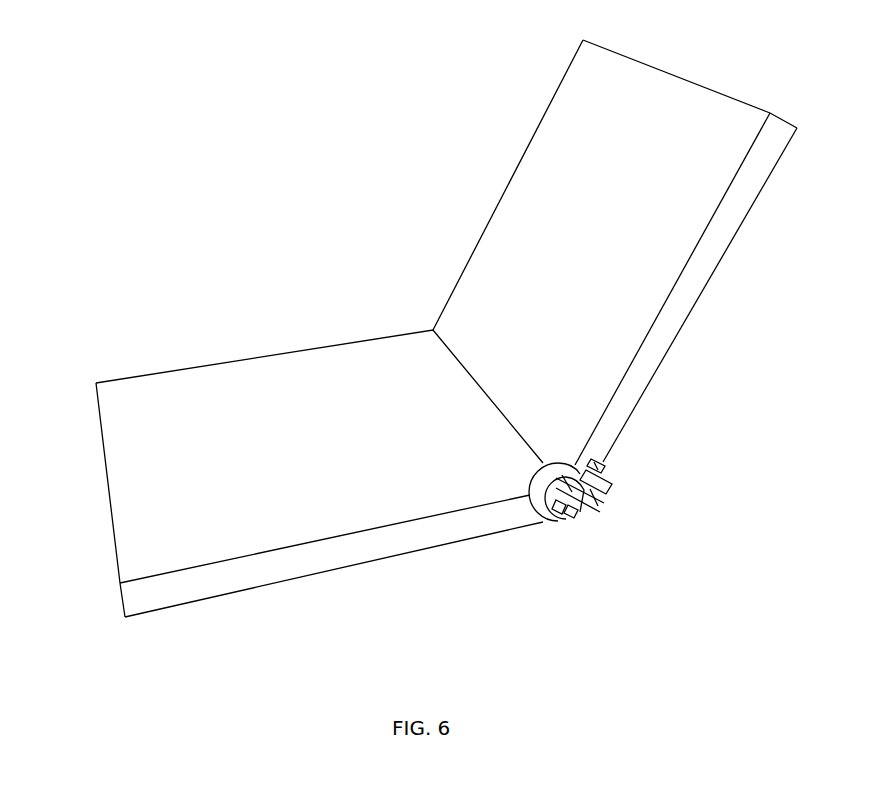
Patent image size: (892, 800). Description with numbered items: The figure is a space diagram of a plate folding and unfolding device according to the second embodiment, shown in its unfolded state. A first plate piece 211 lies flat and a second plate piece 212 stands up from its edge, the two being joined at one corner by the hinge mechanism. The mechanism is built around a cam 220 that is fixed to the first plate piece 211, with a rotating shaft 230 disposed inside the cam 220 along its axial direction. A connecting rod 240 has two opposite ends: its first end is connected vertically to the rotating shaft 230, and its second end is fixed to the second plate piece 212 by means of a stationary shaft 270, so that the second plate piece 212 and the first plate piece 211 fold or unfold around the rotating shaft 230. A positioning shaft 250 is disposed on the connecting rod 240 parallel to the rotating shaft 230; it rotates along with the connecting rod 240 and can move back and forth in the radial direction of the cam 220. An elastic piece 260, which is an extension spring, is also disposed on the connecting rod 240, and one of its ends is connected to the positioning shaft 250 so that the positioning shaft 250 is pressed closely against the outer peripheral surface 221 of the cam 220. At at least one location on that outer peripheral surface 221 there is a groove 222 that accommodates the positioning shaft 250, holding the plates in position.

The first plate piece 211 is at (285, 565).
The second plate piece 212 is at (518, 258).
The cam 220 is at (548, 513).
The outer peripheral surface 221 is at (583, 502).
The groove 222 is at (582, 510).
The rotating shaft 230 is at (563, 514).
The connecting rod 240 is at (612, 477).
The positioning shaft 250 is at (588, 488).
The elastic piece 260 is at (575, 517).
The stationary shaft 270 is at (598, 466).